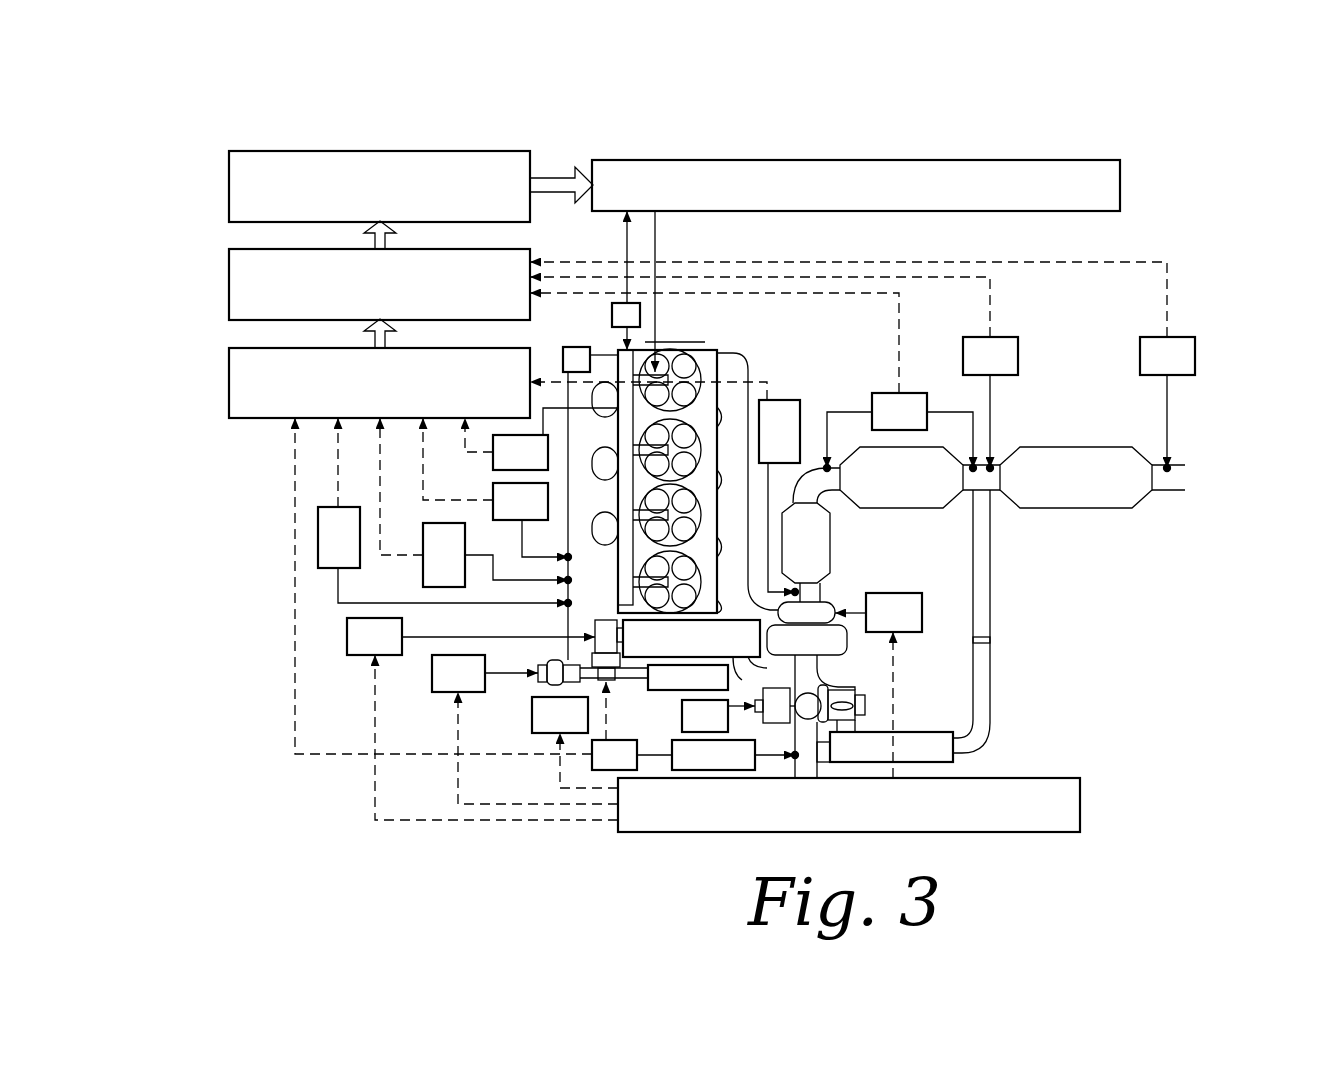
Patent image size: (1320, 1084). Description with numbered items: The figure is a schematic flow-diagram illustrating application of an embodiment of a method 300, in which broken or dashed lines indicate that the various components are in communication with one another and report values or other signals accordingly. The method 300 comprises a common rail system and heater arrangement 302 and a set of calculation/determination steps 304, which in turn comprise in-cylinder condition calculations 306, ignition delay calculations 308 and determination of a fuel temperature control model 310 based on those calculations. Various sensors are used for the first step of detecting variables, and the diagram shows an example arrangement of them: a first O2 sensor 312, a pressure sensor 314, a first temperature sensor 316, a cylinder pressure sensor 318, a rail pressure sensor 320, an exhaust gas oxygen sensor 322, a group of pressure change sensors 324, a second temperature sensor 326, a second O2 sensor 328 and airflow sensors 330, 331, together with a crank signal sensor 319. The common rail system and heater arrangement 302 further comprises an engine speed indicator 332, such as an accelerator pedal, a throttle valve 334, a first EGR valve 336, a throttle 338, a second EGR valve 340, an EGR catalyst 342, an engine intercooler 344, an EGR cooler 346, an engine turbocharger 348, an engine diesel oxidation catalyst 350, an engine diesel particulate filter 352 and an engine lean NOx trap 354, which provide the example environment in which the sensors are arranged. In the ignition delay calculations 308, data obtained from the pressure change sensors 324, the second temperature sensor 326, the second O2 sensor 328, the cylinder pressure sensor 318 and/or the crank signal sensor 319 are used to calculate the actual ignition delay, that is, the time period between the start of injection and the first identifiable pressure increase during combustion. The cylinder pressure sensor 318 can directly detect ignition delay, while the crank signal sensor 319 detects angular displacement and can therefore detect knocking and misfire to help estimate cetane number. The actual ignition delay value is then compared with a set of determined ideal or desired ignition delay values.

The method 300 is at (1212, 158).
The common rail system and heater arrangement 302 is at (856, 185).
The calculation/determination steps 304 is at (211, 151).
The in-cylinder condition calculations 306 is at (379, 383).
The ignition delay calculations 308 is at (379, 284).
The fuel temperature control model 310 is at (379, 186).
The first O2 sensor 312 is at (443, 555).
The pressure sensor 314 is at (495, 555).
The first temperature sensor 316 is at (530, 520).
The cylinder pressure sensor 318 is at (555, 439).
The crank signal sensor 319 is at (577, 347).
The rail pressure sensor 320 is at (640, 315).
The exhaust gas oxygen sensor 322 is at (779, 496).
The pressure change sensors 324 is at (900, 430).
The second temperature sensor 326 is at (990, 402).
The second O2 sensor 328 is at (1167, 402).
The airflow sensor 330 is at (716, 755).
The airflow sensor 331 is at (614, 726).
The engine speed indicator 332 is at (849, 805).
The throttle valve 334 is at (482, 719).
The first EGR valve 336 is at (525, 729).
The throttle 338 is at (575, 742).
The second EGR valve 340 is at (722, 716).
The EGR catalyst 342 is at (672, 690).
The engine intercooler 344 is at (679, 650).
The EGR cooler 346 is at (885, 747).
The engine turbocharger 348 is at (878, 685).
The engine diesel oxidation catalyst 350 is at (806, 552).
The engine diesel particulate filter 352 is at (901, 477).
The engine lean NOx trap 354 is at (1092, 477).